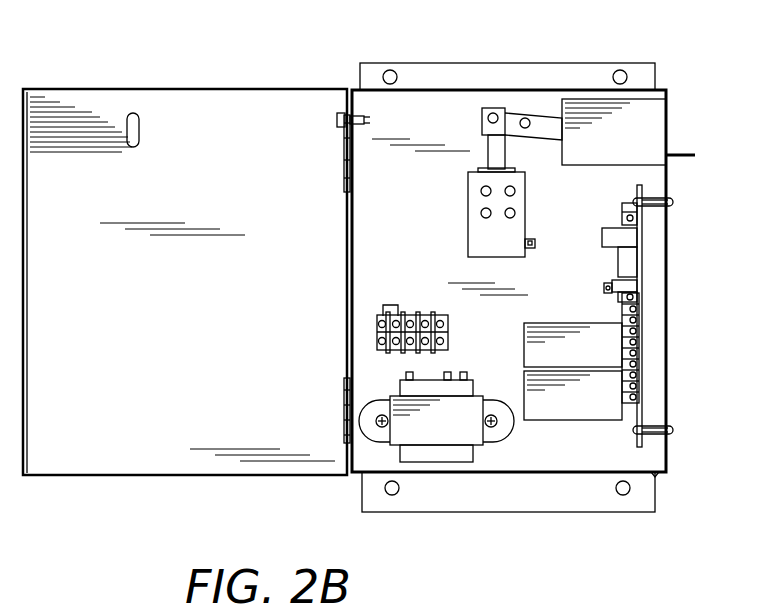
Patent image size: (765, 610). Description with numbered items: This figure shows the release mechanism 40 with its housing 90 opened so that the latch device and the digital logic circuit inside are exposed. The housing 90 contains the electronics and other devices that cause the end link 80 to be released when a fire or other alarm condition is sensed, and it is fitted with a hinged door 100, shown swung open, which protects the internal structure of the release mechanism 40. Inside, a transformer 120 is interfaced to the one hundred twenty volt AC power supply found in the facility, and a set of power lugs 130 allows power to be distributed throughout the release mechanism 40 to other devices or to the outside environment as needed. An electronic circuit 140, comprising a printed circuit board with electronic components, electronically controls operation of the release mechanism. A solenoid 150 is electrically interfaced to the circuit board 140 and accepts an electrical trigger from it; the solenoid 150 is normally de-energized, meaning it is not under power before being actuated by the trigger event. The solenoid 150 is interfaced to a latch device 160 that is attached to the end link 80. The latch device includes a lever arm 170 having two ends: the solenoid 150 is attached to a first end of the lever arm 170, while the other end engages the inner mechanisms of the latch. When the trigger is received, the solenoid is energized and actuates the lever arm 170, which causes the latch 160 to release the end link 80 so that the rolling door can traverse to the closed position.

The release mechanism 40 is at (680, 495).
The end link 80 is at (678, 149).
The housing 90 is at (657, 477).
The hinged door 100 is at (203, 475).
The transformer 120 is at (475, 460).
The power lugs 130 is at (425, 315).
The electronic circuit 140 is at (637, 265).
The solenoid 150 is at (468, 206).
The latch device 160 is at (603, 165).
The lever arm 170 is at (540, 100).